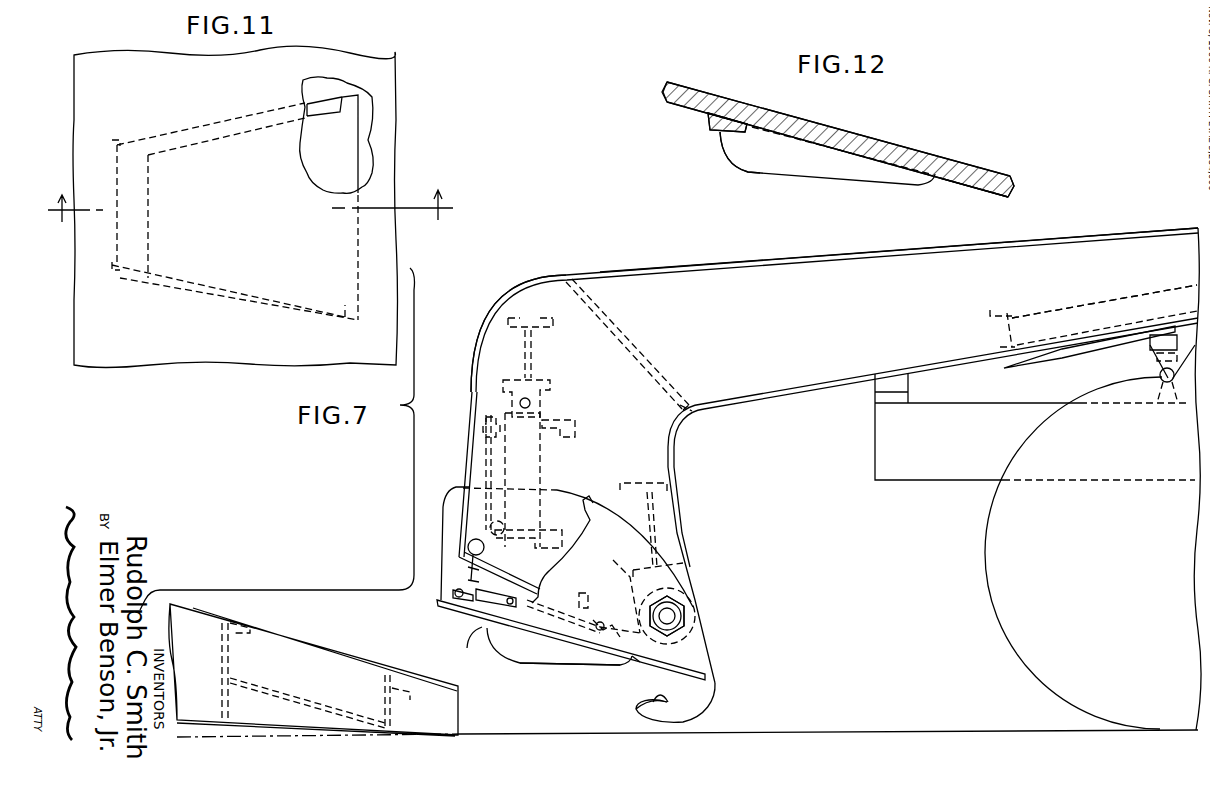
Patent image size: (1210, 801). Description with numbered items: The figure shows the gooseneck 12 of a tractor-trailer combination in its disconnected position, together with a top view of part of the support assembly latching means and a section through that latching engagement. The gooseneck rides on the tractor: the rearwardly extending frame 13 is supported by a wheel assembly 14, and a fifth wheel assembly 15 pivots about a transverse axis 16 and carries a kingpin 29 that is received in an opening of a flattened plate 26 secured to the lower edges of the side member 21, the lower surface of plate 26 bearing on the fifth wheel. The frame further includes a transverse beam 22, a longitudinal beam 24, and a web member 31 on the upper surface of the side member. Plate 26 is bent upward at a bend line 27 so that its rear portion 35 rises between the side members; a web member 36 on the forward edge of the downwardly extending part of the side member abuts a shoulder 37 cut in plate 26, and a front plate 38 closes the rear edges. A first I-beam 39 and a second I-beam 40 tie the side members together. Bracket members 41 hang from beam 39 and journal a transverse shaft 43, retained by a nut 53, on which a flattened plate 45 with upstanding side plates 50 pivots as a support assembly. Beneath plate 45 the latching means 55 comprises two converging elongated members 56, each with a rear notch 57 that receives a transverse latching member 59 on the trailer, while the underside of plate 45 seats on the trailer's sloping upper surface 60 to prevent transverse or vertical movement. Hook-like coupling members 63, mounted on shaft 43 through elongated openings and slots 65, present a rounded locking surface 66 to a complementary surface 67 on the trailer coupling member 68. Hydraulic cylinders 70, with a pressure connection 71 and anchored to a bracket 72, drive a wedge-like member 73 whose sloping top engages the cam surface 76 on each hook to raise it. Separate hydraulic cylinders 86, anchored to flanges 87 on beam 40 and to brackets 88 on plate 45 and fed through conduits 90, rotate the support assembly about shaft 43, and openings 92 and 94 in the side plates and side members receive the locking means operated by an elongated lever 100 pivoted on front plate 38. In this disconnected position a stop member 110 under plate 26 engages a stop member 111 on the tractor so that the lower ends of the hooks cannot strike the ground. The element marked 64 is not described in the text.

In FIG. 11, the gooseneck 12 is at (255, 206).
In FIG. 7, the frame 13 is at (1035, 448).
In FIG. 7, the wheel assembly 14 is at (1073, 553).
In FIG. 7, the fifth wheel assembly 15 is at (1089, 363).
In FIG. 7, the axis 16 is at (1172, 388).
In FIG. 7, the side member 21 is at (828, 411).
In FIG. 7, the beam 22 is at (1093, 311).
In FIG. 7, the longitudinally extending beam 24 is at (1104, 288).
In FIG. 7, the flattened plate 26 is at (950, 382).
In FIG. 7, the bend line 27 is at (700, 383).
In FIG. 7, the kingpin 29 is at (1144, 360).
In FIG. 7, the web member 31 is at (899, 246).
In FIG. 7, the rear portion 35 is at (627, 344).
In FIG. 7, the web member 36 is at (707, 565).
In FIG. 7, the shoulder 37 is at (707, 433).
In FIG. 7, the front plate 38 is at (501, 333).
In FIG. 7, the first I-beam 39 is at (651, 515).
In FIG. 7, the second I-beam 40 is at (536, 336).
In FIG. 7, the bracket member 41 is at (623, 586).
In FIG. 7, the shaft 43 is at (702, 616).
In FIG. 11, the flattened plate 45 is at (235, 227).
In FIG. 12, the flattened plate 45 is at (838, 139).
In FIG. 7, the flattened plate 45 is at (571, 640).
In FIG. 7, the side plate 50 is at (625, 537).
In FIG. 7, the nut 53 is at (697, 607).
In FIG. 7, the latching means 55 is at (570, 685).
In FIG. 11, the elongated member 56 is at (235, 216).
In FIG. 12, the elongated member 56 is at (827, 175).
In FIG. 7, the elongated member 56 is at (559, 663).
In FIG. 12, the notch 57 is at (724, 157).
In FIG. 7, the notch 57 is at (469, 646).
In FIG. 12, the latching member 59 is at (708, 129).
In FIG. 7, the latching member 59 is at (257, 671).
In FIG. 11, the sloping upper surface 60 is at (373, 135).
In FIG. 12, the sloping upper surface 60 is at (974, 203).
In FIG. 7, the sloping upper surface 60 is at (313, 670).
In FIG. 7, the hook-like coupling member 63 is at (700, 701).
In FIG. 7, the washer 64 is at (698, 617).
In FIG. 7, the elongated opening / slot 65 is at (637, 694).
In FIG. 7, the rounded locking surface 66 is at (682, 698).
In FIG. 7, the complementary surface 67 is at (418, 701).
In FIG. 7, the coupling member 68 is at (308, 703).
In FIG. 7, the hydraulic cylinder 70 is at (583, 564).
In FIG. 7, the connection 71 is at (598, 591).
In FIG. 7, the bracket 72 is at (435, 602).
In FIG. 7, the wedge-like member 73 is at (611, 615).
In FIG. 7, the cam surface 76 is at (641, 673).
In FIG. 7, the hydraulic cylinder 86 is at (535, 480).
In FIG. 7, the flange 87 is at (553, 398).
In FIG. 7, the bracket 88 is at (499, 640).
In FIG. 7, the conduit 90 is at (558, 475).
In FIG. 7, the opening 92 is at (489, 543).
In FIG. 7, the opening 94 is at (452, 555).
In FIG. 7, the elongated lever 100 is at (468, 439).
In FIG. 7, the stop member 110 is at (927, 388).
In FIG. 7, the stop member 111 is at (914, 415).